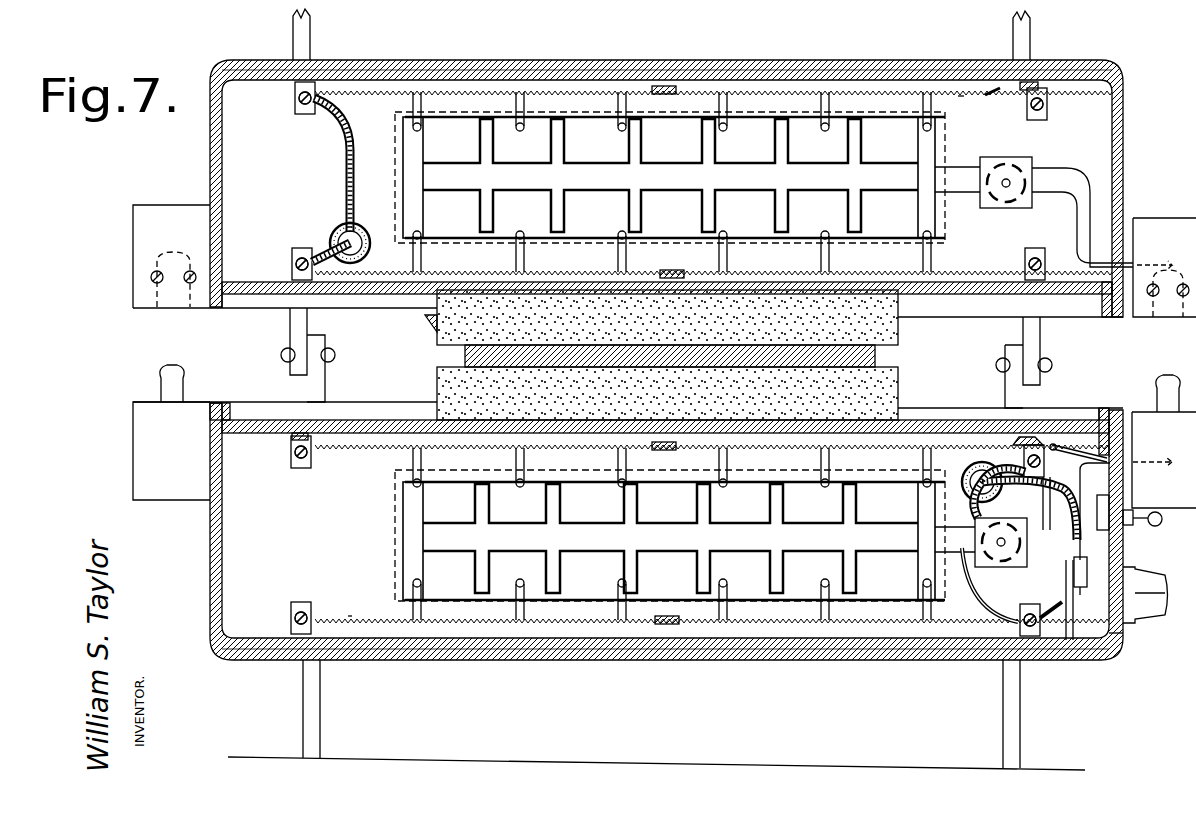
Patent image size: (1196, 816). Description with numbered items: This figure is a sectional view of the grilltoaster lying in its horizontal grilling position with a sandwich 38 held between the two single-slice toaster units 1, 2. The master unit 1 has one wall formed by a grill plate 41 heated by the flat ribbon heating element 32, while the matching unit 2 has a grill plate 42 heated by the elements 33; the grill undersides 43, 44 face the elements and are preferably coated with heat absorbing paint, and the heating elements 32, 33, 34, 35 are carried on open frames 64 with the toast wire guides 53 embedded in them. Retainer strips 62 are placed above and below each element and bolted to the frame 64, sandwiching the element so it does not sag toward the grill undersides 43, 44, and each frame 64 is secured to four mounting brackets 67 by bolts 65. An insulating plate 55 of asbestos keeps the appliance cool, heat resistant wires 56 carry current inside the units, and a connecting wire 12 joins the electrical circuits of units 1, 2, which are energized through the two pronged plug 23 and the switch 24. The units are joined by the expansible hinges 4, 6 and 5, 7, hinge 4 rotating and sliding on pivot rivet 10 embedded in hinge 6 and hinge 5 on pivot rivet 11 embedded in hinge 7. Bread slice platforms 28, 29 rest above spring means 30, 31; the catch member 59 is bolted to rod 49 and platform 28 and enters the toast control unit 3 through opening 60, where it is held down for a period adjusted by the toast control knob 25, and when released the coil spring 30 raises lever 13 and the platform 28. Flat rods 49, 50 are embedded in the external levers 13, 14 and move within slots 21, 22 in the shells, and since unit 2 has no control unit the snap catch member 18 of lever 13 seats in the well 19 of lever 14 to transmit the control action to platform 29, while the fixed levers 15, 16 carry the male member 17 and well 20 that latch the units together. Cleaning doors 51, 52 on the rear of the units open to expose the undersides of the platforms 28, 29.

The toaster unit 1 is at (210, 579).
The toaster unit 2 is at (210, 127).
The toast control unit 3 is at (1112, 630).
The expansible hinge 4 is at (1023, 394).
The expansible hinge 5 is at (307, 386).
The expansible hinge 6 is at (1025, 48).
The expansible hinge 7 is at (312, 38).
The pivot rivet 10 is at (1000, 364).
The pivot rivet 11 is at (336, 354).
The connecting wire 12 is at (425, 319).
The external lever 13 is at (1170, 496).
The external lever 14 is at (1170, 218).
The lever 15 is at (168, 500).
The lever 16 is at (175, 205).
The snap catch male member 17 is at (182, 362).
The snap catch male member 18 is at (1160, 378).
The snap catch well 19 is at (1166, 314).
The snap catch well 20 is at (174, 306).
The slot 21 is at (1112, 463).
The slot 22 is at (1109, 270).
The electric plug 23 is at (1125, 420).
The switch 24 is at (1160, 526).
The toast control knob 25 is at (1160, 613).
The bread slice platform 28 is at (734, 531).
The bread slice platform 29 is at (580, 171).
The coil spring 30 is at (1001, 567).
The spring means 31 is at (1003, 208).
The heating element 32 is at (352, 456).
The heating element 33 is at (966, 268).
The heating element 34 is at (350, 616).
The heating element 35 is at (962, 100).
The sandwich 38 is at (437, 340).
The grill plate 41 is at (253, 402).
The grill plate 42 is at (250, 310).
The grill underside 43 is at (250, 438).
The grill underside 44 is at (258, 272).
The flat rod 49 is at (1100, 463).
The flat rod 50 is at (1092, 257).
The cleaning door 51 is at (582, 496).
The cleaning door 52 is at (660, 226).
The toast wire guide 53 is at (626, 105).
The insulating plate 55 is at (262, 82).
The wire 56 is at (352, 137).
The catch member 59 is at (1087, 566).
The opening 60 is at (1080, 594).
The retainer strip 62 is at (676, 92).
The open frame 64 is at (992, 96).
The bolt 65 is at (295, 112).
The mounting bracket 67 is at (305, 115).